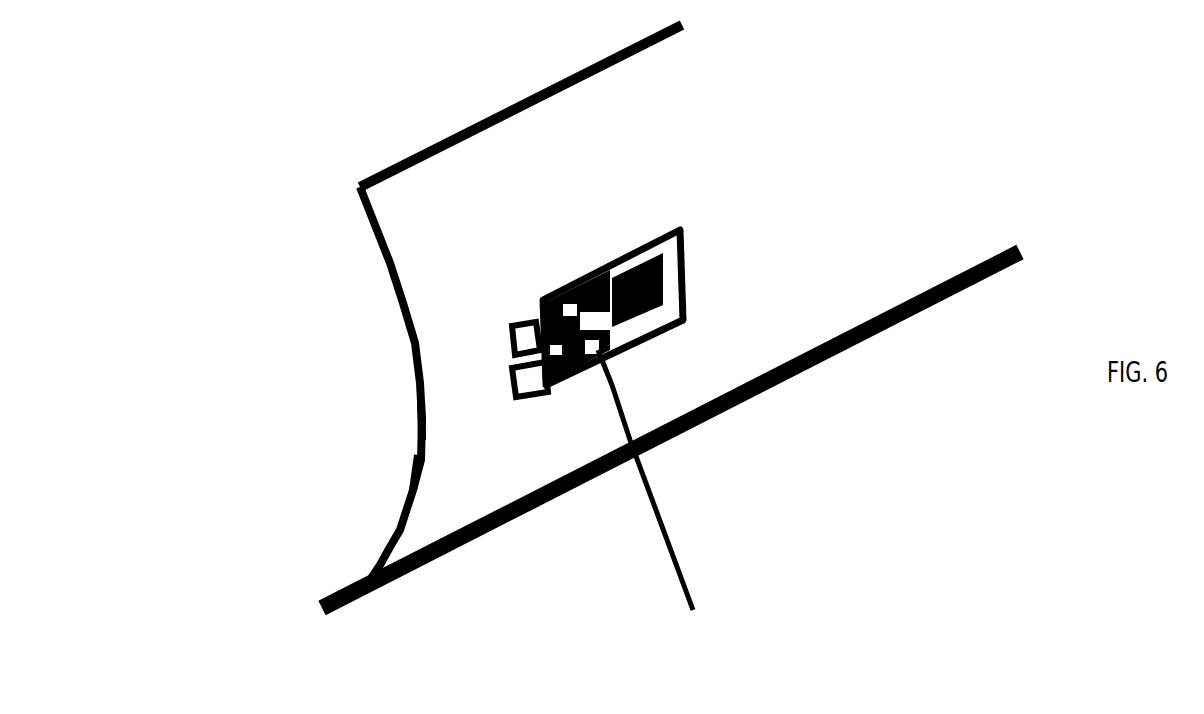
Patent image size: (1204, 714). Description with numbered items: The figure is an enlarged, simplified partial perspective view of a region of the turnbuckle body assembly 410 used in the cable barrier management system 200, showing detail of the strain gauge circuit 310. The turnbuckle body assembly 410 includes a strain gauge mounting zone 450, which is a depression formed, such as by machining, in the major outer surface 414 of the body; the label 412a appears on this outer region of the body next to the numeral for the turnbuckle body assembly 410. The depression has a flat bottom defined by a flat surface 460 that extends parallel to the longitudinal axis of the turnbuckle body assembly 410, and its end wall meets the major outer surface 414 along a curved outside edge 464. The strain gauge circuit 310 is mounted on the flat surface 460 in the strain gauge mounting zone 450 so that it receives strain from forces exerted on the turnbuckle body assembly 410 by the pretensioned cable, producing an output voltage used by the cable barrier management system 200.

The cable barrier management system 200 is at (463, 666).
The strain gauge circuit 310 is at (630, 228).
The turnbuckle body assembly 410 is at (521, 304).
The outer surface of panel 412a is at (532, 77).
The major outer surface 414 is at (390, 445).
The strain gauge mounting zone 450 is at (443, 385).
The flat surface 460 is at (527, 253).
The curved outside edge 464 is at (410, 418).